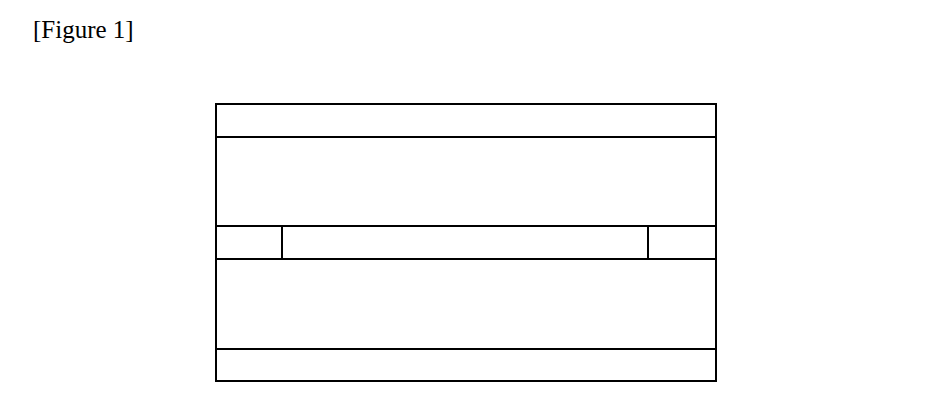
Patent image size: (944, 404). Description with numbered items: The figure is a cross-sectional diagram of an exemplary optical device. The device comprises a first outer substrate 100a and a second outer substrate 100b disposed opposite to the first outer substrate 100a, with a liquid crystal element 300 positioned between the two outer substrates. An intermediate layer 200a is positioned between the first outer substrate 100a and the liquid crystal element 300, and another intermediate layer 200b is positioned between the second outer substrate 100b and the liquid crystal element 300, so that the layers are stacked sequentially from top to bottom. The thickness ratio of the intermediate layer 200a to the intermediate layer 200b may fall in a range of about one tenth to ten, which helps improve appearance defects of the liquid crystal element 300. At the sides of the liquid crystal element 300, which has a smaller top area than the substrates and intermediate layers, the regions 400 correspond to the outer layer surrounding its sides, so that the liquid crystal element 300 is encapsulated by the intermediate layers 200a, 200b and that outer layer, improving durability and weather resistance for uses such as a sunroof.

The first outer substrate 100a is at (716, 118).
The intermediate layer 200a is at (716, 207).
The liquid crystal element 300 is at (334, 238).
The edge sealing member 400 is at (235, 242).
The intermediate layer 200b is at (716, 308).
The second outer substrate 100b is at (716, 365).